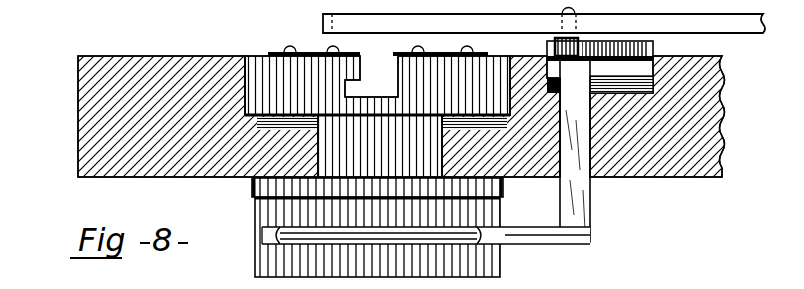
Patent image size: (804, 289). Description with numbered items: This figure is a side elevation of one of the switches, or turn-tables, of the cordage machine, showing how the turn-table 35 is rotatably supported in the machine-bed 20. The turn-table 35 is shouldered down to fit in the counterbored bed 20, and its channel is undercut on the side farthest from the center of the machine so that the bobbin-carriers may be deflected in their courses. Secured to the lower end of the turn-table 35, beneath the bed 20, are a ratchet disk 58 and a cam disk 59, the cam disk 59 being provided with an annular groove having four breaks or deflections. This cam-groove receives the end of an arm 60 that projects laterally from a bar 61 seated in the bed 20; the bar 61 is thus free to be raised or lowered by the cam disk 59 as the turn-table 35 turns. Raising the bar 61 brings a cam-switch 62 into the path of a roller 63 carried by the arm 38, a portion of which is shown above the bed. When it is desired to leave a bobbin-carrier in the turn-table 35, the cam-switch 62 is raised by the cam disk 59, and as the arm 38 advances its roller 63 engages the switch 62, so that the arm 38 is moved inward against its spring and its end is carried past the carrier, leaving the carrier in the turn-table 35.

The bed 20 is at (85, 108).
The turn-table 35 is at (443, 73).
The arm 38 is at (544, 22).
The ratchet disk 58 is at (505, 188).
The cam disk 59 is at (257, 233).
The arm 60 is at (536, 244).
The bar 61 is at (591, 200).
The cam-switch 62 is at (654, 47).
The roller 63 is at (588, 33).